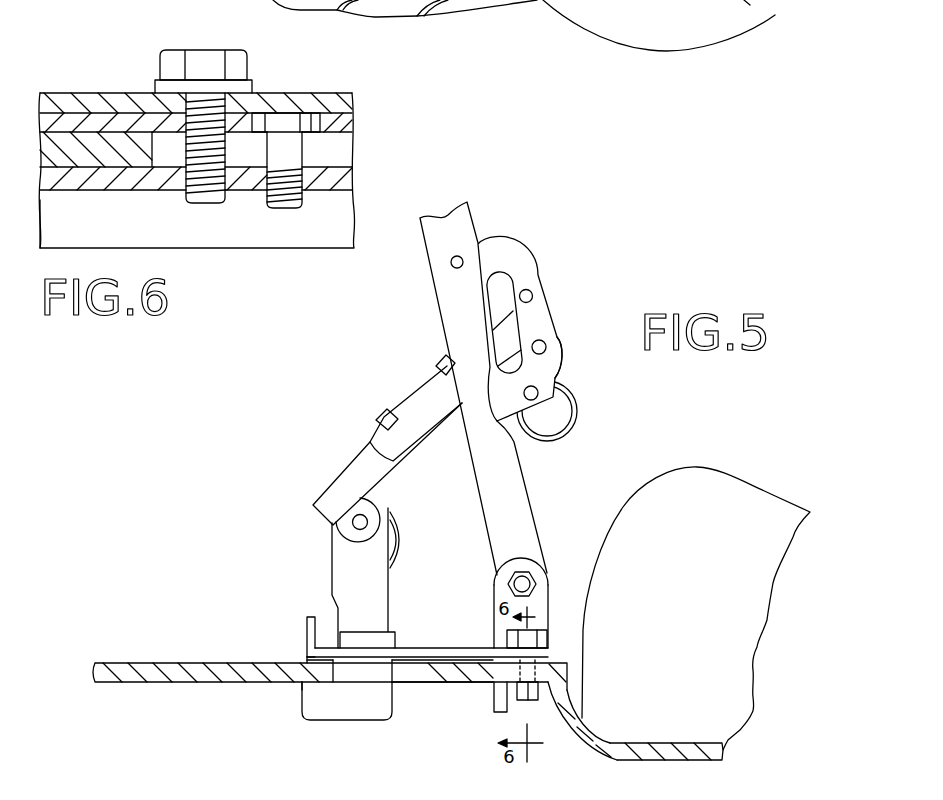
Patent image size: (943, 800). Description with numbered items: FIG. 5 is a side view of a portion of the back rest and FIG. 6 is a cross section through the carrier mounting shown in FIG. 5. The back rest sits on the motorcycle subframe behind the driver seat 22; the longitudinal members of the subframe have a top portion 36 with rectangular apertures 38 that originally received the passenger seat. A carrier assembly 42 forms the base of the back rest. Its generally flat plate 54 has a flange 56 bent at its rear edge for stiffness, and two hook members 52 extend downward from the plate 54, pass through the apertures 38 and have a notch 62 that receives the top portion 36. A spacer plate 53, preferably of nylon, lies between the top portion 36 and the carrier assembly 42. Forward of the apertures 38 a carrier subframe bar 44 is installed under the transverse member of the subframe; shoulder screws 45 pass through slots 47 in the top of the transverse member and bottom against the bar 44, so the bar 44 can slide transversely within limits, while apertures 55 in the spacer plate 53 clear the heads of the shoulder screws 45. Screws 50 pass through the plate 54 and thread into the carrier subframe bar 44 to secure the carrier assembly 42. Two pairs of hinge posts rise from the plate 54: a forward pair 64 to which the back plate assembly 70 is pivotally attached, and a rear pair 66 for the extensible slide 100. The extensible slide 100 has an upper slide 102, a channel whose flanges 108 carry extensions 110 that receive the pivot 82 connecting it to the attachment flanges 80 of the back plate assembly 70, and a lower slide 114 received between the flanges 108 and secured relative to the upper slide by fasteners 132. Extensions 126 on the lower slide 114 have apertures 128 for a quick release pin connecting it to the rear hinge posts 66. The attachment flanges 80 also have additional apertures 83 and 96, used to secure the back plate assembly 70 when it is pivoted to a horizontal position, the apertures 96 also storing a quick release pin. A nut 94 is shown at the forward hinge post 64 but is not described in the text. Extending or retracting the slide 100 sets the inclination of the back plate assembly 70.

In FIG. 5, the driver seat 22 is at (757, 488).
In FIG. 6, the top portion 36 is at (107, 160).
In FIG. 5, the top portion 36 is at (182, 663).
In FIG. 5, the rectangular shaped apertures 38 is at (413, 682).
In FIG. 6, the carrier assembly 42 is at (48, 93).
In FIG. 5, the carrier assembly 42 is at (305, 601).
In FIG. 6, the carrier subframe bar 44 is at (58, 182).
In FIG. 5, the carrier subframe bar 44 is at (492, 714).
In FIG. 6, the shoulder screws 45 is at (293, 113).
In FIG. 6, the slots 47 is at (167, 147).
In FIG. 6, the screws 50 is at (218, 48).
In FIG. 5, the screws 50 is at (548, 630).
In FIG. 5, the hook members 52 is at (330, 720).
In FIG. 6, the spacer plate 53 is at (85, 113).
In FIG. 5, the spacer plate 53 is at (305, 657).
In FIG. 5, the flat plate 54 is at (435, 648).
In FIG. 6, the apertures 55 is at (322, 123).
In FIG. 5, the flange 56 is at (307, 625).
In FIG. 5, the notch 62 is at (305, 680).
In FIG. 5, the forward hinge posts 64 is at (493, 592).
In FIG. 5, the rear hinge posts 66 is at (333, 565).
In FIG. 5, the back plate assembly 70 is at (542, 510).
In FIG. 5, the attachment flanges 80 is at (518, 244).
In FIG. 5, the pivot 82 is at (544, 345).
In FIG. 5, the aperture 83 is at (531, 295).
In FIG. 5, the hex nut 94 is at (540, 573).
In FIG. 5, the apertures 96 is at (536, 393).
In FIG. 5, the extensible slide 100 is at (351, 426).
In FIG. 5, the upper slide 102 is at (435, 368).
In FIG. 5, the channel flanges 108 is at (423, 410).
In FIG. 5, the extensions 110 is at (563, 353).
In FIG. 5, the lower slide 114 is at (332, 486).
In FIG. 5, the extensions 126 is at (380, 500).
In FIG. 5, the apertures 128 is at (360, 530).
In FIG. 5, the fasteners 132 is at (377, 416).